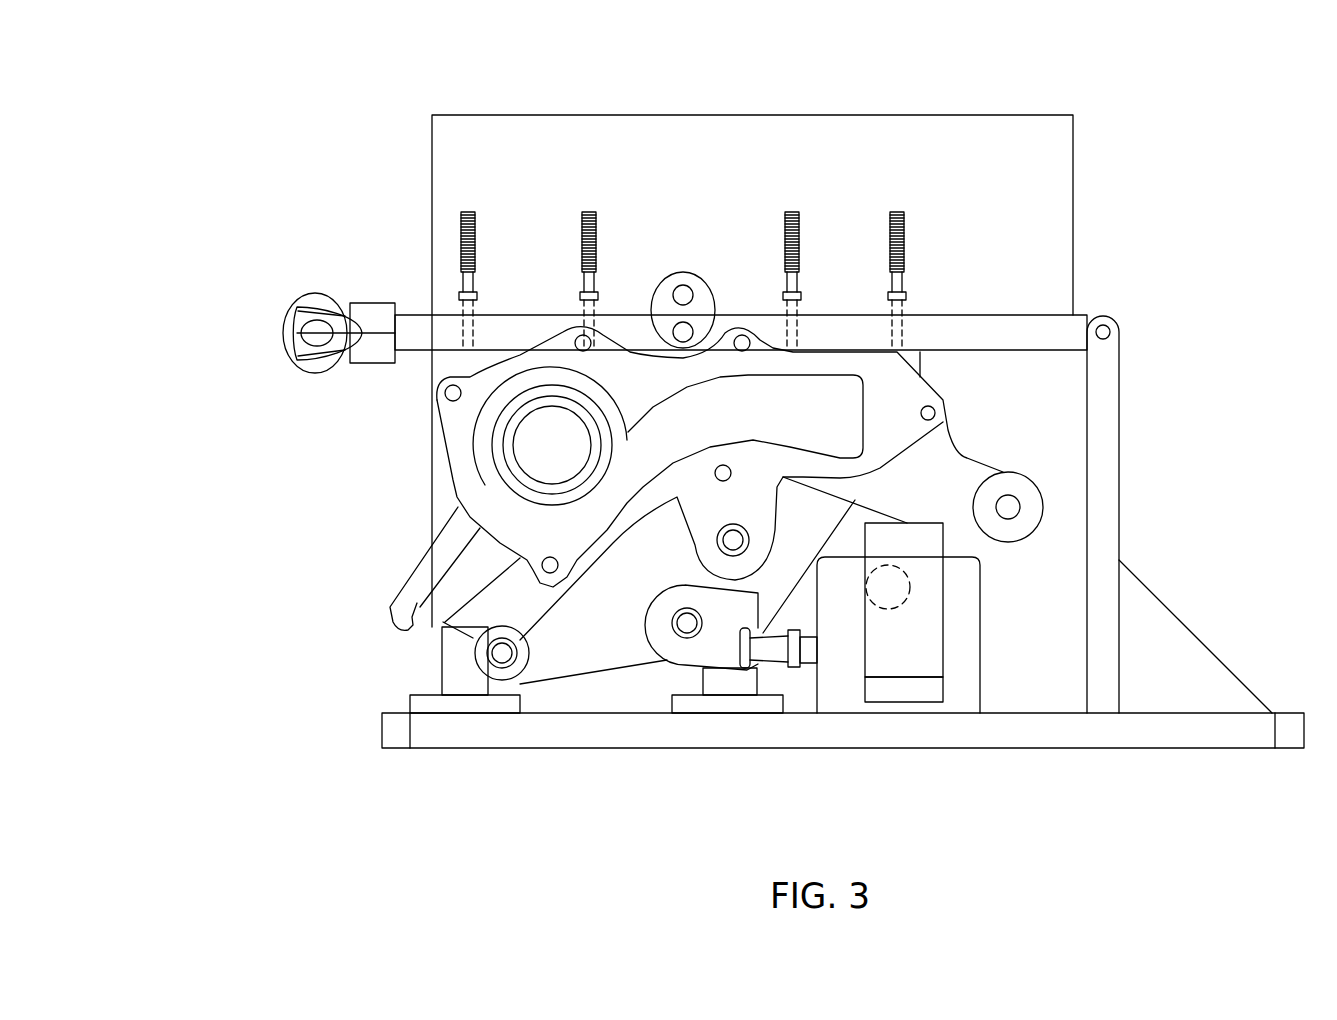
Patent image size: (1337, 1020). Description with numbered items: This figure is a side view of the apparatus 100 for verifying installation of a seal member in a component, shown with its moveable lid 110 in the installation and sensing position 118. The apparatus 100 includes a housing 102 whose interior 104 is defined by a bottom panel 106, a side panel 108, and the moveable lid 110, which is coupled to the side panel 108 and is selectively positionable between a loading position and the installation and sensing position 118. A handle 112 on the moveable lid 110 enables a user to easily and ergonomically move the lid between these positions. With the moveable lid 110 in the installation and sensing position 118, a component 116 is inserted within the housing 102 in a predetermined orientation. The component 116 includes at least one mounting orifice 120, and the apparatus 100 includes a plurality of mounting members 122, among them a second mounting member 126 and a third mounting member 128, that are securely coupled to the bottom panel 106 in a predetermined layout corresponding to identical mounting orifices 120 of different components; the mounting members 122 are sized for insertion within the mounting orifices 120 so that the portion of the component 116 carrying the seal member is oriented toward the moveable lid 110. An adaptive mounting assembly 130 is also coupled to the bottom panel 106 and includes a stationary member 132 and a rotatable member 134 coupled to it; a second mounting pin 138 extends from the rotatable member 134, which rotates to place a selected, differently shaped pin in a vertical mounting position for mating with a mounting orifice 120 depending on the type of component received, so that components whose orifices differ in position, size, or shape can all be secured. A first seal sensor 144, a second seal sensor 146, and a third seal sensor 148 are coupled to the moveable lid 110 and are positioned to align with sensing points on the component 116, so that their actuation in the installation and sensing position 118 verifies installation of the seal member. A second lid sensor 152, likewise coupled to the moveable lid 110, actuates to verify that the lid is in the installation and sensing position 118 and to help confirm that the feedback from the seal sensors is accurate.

The apparatus 100 is at (1147, 58).
The housing 102 is at (1172, 168).
The interior 104 is at (363, 480).
The bottom panel 106 is at (497, 748).
The side panel 108 is at (1120, 384).
The moveable lid 110 is at (1037, 353).
The handle 112 is at (317, 293).
The component 116 is at (437, 395).
The installation and sensing position 118 is at (302, 200).
The mounting orifice 120 is at (953, 532).
The mounting members 122 is at (518, 687).
The second mounting member 126 is at (442, 682).
The third mounting member 128 is at (800, 700).
The adaptive mounting assembly 130 is at (993, 690).
The stationary member 132 is at (982, 660).
The rotatable member 134 is at (920, 690).
The second mounting pin 138 is at (889, 609).
The first seal sensor 144 is at (898, 208).
The second seal sensor 146 is at (793, 208).
The third seal sensor 148 is at (590, 208).
The second lid sensor 152 is at (468, 208).